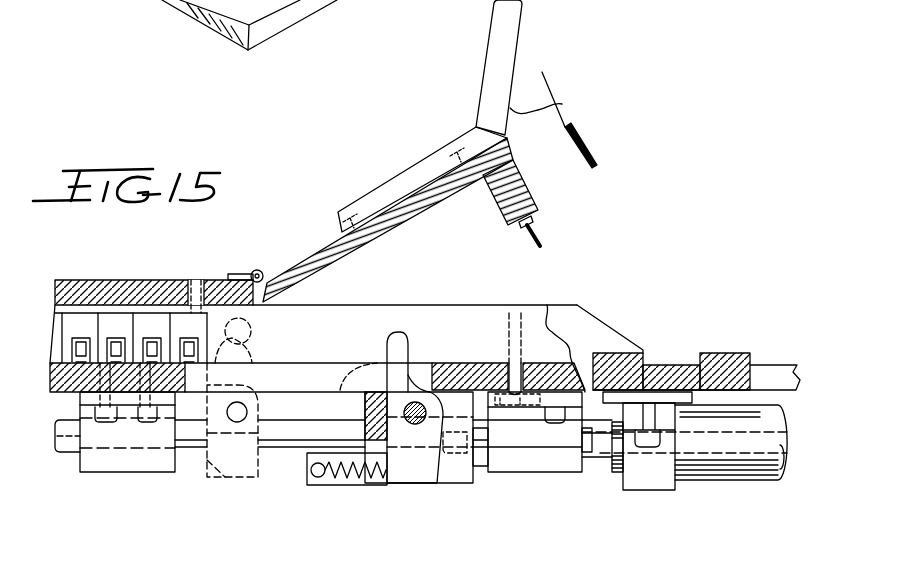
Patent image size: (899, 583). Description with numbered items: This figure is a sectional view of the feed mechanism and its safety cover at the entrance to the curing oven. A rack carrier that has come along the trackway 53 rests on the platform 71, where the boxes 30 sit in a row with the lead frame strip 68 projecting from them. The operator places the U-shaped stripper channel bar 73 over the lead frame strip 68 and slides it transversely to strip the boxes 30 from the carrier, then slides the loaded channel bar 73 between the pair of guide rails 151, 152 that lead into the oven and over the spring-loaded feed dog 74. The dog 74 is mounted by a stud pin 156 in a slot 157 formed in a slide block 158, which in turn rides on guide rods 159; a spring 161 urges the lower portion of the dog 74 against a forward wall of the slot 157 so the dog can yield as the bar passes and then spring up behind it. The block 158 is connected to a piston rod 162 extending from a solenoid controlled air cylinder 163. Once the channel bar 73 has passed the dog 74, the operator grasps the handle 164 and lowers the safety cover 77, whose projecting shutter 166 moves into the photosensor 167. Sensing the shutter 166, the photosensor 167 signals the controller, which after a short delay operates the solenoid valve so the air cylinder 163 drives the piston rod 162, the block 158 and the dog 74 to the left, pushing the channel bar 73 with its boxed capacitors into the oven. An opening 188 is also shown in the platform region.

The handle 164 is at (517, 52).
The safety cover 77 is at (327, 240).
The lead frame strip 68 is at (81, 338).
The stripper channel bar 73 is at (113, 340).
The box 30 is at (166, 342).
The opening 188 is at (253, 331).
The feed dog 74 is at (403, 333).
The platform 71 is at (460, 358).
The photosensor 167 is at (504, 322).
The guide rail 152 is at (527, 305).
The guide rail 151 is at (603, 315).
The trackway 53 is at (718, 353).
The shutter 166 is at (535, 227).
The slide block 158 is at (363, 415).
The guide rod 159 is at (285, 450).
The spring 161 is at (370, 480).
The slot 157 is at (455, 478).
The stud pin 156 is at (437, 485).
The piston rod 162 is at (537, 458).
The air cylinder 163 is at (712, 483).